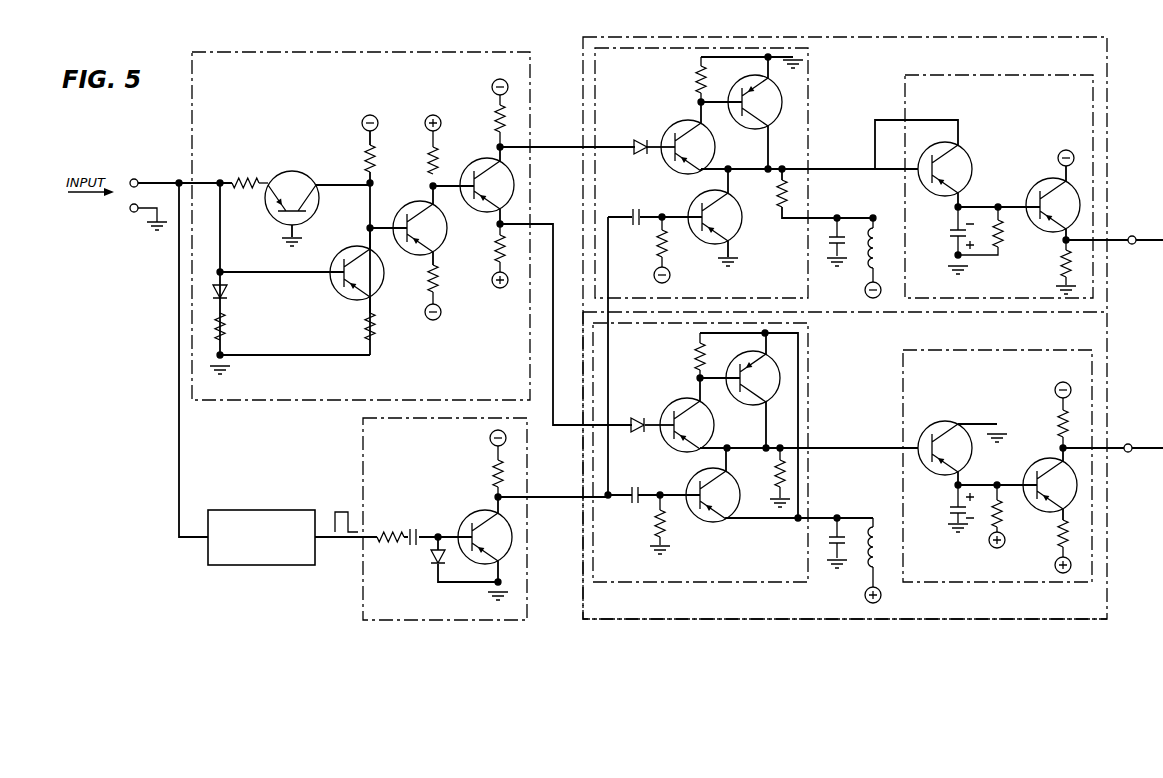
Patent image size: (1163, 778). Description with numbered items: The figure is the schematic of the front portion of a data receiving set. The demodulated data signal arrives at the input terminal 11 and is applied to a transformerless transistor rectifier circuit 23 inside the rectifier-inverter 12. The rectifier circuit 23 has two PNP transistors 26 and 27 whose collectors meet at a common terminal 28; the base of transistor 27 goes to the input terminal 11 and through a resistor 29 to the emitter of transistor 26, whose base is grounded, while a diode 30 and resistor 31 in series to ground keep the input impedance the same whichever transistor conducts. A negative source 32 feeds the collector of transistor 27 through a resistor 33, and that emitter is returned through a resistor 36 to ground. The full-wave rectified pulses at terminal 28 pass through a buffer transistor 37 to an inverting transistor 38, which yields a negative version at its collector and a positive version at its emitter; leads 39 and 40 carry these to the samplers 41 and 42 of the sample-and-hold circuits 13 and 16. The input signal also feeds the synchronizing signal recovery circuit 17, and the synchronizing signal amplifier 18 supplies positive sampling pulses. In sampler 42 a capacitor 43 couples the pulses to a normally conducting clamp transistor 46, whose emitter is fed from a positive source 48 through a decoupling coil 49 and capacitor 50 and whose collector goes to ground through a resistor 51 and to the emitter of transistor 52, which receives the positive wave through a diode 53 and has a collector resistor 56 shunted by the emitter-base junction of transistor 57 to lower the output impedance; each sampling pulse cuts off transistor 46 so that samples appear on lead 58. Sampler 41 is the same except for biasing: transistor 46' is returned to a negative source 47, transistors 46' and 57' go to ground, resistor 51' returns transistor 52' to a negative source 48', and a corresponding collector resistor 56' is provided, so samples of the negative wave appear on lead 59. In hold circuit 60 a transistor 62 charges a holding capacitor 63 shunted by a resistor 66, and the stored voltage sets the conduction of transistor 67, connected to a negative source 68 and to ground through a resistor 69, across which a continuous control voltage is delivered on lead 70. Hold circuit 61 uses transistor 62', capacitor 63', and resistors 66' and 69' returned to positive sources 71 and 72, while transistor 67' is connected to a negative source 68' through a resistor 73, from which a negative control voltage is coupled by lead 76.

The input terminal 11 is at (134, 179).
The rectifier-inverter circuit 12 is at (192, 108).
The sample and hold circuit 13 is at (583, 60).
The sample and hold circuit 16 is at (582, 582).
The synchronizing signal recovery circuit 17 is at (258, 566).
The synchronizing signal amplifier 18 is at (363, 598).
The rectifier circuit 23 is at (258, 253).
The transistor 26 is at (294, 171).
The transistor 27 is at (334, 285).
The common terminal 28 is at (366, 228).
The resistor 29 is at (252, 180).
The diode 30 is at (229, 292).
The resistor 31 is at (228, 328).
The negative source 32 is at (362, 118).
The resistor 33 is at (362, 158).
The resistor 36 is at (362, 328).
The transistor 37 is at (430, 242).
The transistor 38 is at (486, 205).
The lead 39 is at (552, 145).
The lead 40 is at (544, 219).
The sampling circuit 41 is at (808, 72).
The sampling circuit 42 is at (808, 358).
The capacitor 43 is at (638, 508).
The transistor 46 is at (738, 485).
The transistor 46' is at (702, 224).
The negative source 47 is at (654, 278).
The positive source 48 is at (886, 600).
The negative potential source 48' is at (849, 259).
The coil 49 is at (878, 528).
The capacitor 50 is at (852, 562).
The resistor 51 is at (766, 477).
The resistor 51' is at (812, 196).
The transistor 52 is at (676, 413).
The transistor 52' is at (676, 138).
The diode 53 is at (640, 420).
The resistor 56 is at (678, 355).
The resistor 56' is at (701, 79).
The transistor 57 is at (740, 390).
The transistor 57' is at (741, 113).
The lead 58 is at (852, 450).
The lead 59 is at (844, 170).
The hold circuit 60 is at (960, 75).
The hold circuit 61 is at (965, 350).
The transistor 62 is at (956, 169).
The transistor 62' is at (962, 440).
The holding capacitor 63 is at (946, 240).
The capacitor 63' is at (945, 508).
The resistor 66 is at (992, 232).
The resistor 66' is at (1011, 508).
The transistor 67 is at (1047, 202).
The transistor 67' is at (1040, 483).
The negative source 68 is at (1057, 145).
The negative source 68' is at (1039, 392).
The resistor 69 is at (1047, 267).
The resistor 69' is at (1040, 539).
The lead 70 is at (1114, 242).
The positive source 71 is at (989, 540).
The positive source 72 is at (1055, 566).
The resistor 73 is at (1056, 426).
The lead 76 is at (1114, 450).